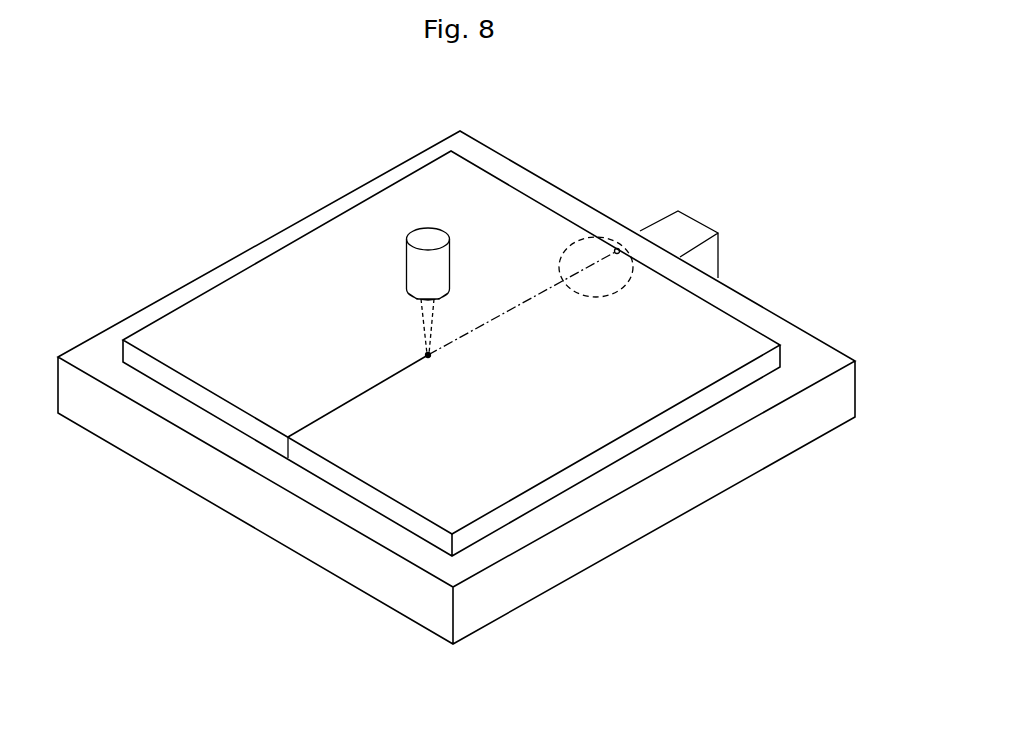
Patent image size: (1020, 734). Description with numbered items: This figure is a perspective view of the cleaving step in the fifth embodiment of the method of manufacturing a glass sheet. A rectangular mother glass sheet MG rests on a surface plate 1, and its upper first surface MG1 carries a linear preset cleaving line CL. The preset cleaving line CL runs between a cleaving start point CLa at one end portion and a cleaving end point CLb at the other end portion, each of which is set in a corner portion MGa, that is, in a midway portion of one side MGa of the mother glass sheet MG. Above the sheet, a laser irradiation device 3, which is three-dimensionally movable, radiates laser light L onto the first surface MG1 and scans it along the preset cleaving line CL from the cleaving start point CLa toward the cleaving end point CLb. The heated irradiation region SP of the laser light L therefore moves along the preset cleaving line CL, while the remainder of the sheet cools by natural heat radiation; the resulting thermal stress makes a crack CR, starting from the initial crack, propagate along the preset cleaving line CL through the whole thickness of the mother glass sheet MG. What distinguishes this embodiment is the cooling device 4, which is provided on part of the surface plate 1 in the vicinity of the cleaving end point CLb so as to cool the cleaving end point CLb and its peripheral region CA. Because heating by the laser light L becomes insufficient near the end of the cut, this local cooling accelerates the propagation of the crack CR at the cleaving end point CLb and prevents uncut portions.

The surface plate 1 is at (702, 474).
The laser irradiation device 3 is at (428, 238).
The cooling device 4 is at (687, 228).
The mother glass sheet MG is at (712, 300).
The first surface MG1 is at (200, 323).
The corner portion MGa is at (495, 177).
The laser light L is at (435, 328).
The irradiation region SP is at (430, 358).
The preset cleaving line CL is at (538, 293).
The cleaving start point CLa is at (289, 437).
The cleaving end point CLb is at (617, 250).
The crack CR is at (342, 404).
The peripheral region CA is at (603, 297).